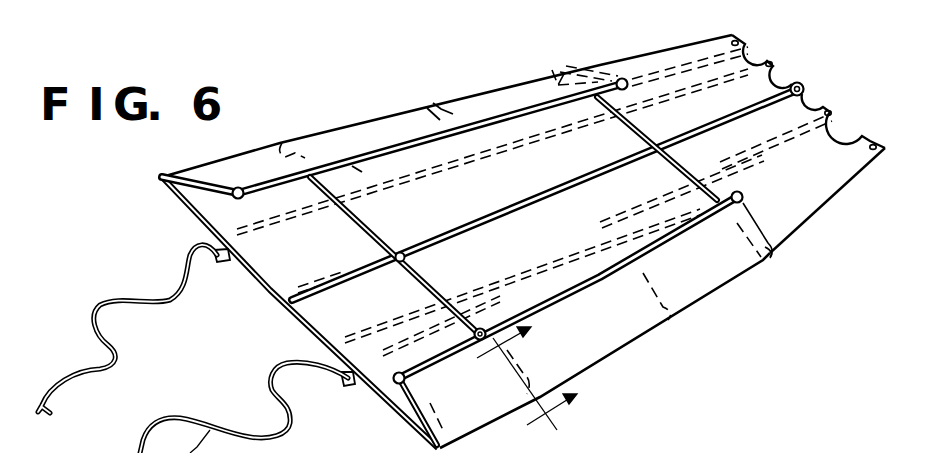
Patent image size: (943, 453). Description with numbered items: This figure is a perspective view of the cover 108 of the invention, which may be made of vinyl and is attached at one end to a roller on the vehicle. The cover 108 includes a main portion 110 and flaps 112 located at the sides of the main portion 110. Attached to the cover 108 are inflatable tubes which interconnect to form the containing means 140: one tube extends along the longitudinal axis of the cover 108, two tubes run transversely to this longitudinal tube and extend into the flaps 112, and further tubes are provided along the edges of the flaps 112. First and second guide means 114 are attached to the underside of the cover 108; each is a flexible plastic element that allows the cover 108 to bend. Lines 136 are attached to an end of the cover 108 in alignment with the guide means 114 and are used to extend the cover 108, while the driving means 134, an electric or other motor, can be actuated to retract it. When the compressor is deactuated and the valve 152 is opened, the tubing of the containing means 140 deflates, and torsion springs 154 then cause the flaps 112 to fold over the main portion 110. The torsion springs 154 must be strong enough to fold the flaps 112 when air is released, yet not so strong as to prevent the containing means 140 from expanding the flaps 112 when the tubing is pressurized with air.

The cover 108 is at (494, 235).
The main portion 110 is at (458, 217).
The flaps 112 is at (390, 118).
The guide means 114 is at (222, 268).
The driving means 134 is at (366, 162).
The lines 136 is at (150, 310).
The containing means 140 is at (195, 188).
The valve 152 is at (473, 331).
The torsion springs 154 is at (281, 140).